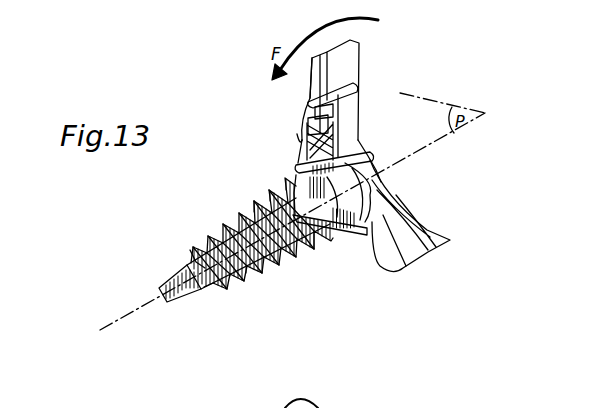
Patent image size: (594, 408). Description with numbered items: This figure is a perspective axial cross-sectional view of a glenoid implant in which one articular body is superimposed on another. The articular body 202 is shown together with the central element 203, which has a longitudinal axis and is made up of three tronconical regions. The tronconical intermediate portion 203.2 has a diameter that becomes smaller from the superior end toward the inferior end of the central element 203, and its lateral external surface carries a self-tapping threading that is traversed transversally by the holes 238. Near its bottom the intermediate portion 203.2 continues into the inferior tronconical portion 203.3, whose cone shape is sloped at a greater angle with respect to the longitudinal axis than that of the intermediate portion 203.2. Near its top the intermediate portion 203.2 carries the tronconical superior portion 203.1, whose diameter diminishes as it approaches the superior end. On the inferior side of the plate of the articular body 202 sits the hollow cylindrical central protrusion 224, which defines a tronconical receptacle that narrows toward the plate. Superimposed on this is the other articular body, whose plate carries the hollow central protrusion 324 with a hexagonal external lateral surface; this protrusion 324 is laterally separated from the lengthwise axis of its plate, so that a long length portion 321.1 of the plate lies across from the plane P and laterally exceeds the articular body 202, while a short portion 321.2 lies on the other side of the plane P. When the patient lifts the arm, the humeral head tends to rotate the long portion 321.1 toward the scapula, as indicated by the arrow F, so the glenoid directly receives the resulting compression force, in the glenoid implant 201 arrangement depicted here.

The bone screw 201 is at (327, 297).
The articular body 202 is at (358, 249).
The central element 203 is at (256, 287).
The superior portion 203.1 is at (353, 150).
The intermediate portion 203.2 is at (228, 222).
The inferior tronconical portion 203.3 is at (196, 303).
The central protrusion 224 is at (374, 265).
The holes 238 is at (190, 250).
The length portion of the plate 321.1 is at (345, 58).
The short portion of the plate 321.2 is at (434, 224).
The central protrusion 324 is at (297, 134).